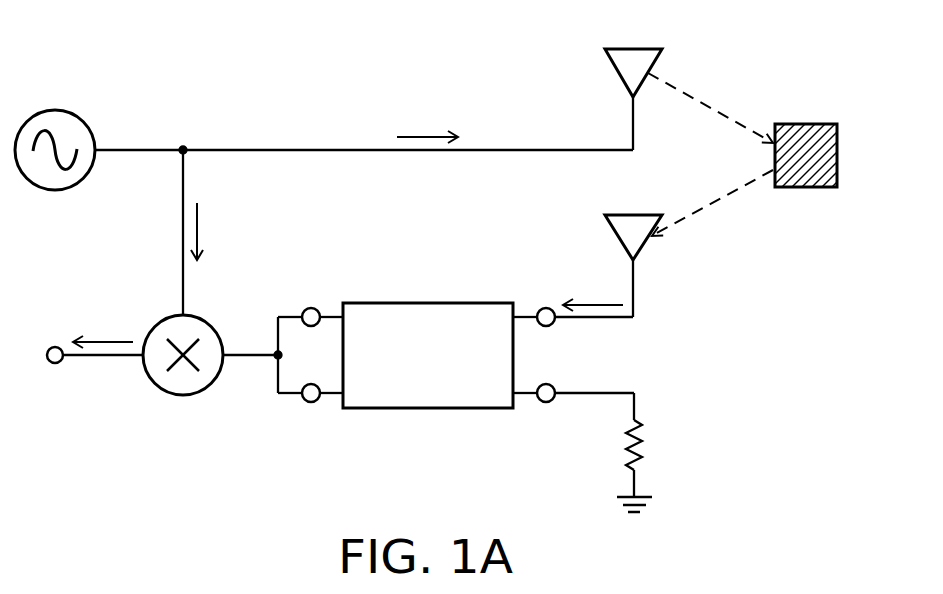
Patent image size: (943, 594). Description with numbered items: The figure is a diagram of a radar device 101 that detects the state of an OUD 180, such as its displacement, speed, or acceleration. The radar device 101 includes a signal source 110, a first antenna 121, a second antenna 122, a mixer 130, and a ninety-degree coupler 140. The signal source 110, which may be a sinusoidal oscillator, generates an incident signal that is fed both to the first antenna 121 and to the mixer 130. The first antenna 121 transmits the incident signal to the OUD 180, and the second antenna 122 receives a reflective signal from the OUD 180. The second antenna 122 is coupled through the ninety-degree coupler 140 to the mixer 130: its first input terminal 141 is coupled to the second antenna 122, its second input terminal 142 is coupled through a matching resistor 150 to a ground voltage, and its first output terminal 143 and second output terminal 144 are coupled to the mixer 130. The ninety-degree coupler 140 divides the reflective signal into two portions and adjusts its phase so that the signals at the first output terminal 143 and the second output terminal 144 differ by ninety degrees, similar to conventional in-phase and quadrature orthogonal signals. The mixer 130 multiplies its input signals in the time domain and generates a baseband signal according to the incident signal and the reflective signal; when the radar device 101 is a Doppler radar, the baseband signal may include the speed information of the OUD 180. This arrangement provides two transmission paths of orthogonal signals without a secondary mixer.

The radar device 101 is at (150, 37).
The signal source 110 is at (57, 110).
The first antenna 121 is at (634, 47).
The second antenna 122 is at (634, 213).
The mixer 130 is at (183, 396).
The 90-degree coupler 140 is at (429, 410).
The first input terminal 141 is at (546, 308).
The second input terminal 142 is at (546, 402).
The first output terminal 143 is at (311, 308).
The second output terminal 144 is at (311, 402).
The matching resistor 150 is at (645, 435).
The OUD (Object Under Detection) 180 is at (804, 124).